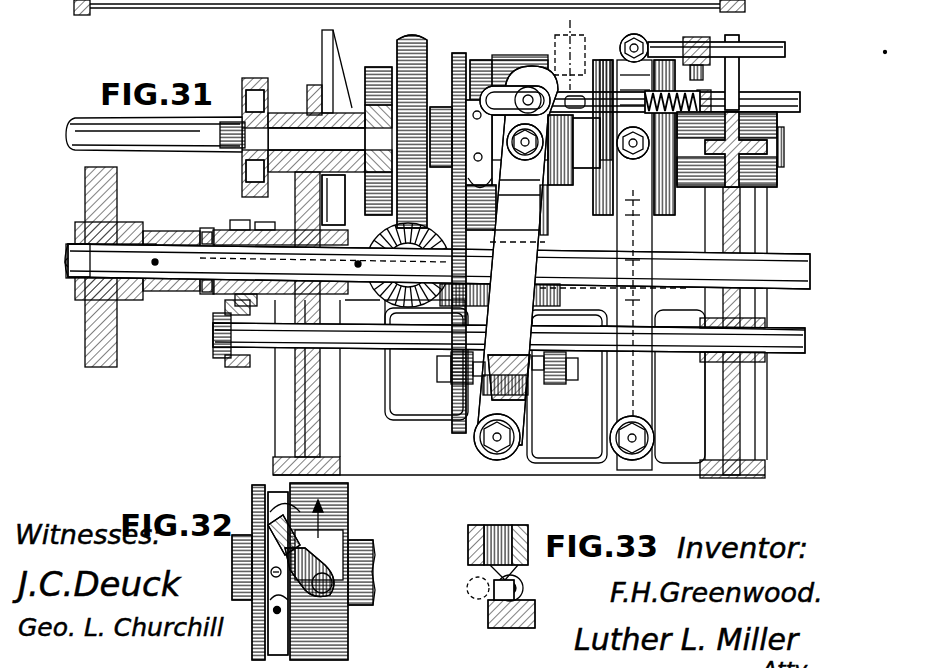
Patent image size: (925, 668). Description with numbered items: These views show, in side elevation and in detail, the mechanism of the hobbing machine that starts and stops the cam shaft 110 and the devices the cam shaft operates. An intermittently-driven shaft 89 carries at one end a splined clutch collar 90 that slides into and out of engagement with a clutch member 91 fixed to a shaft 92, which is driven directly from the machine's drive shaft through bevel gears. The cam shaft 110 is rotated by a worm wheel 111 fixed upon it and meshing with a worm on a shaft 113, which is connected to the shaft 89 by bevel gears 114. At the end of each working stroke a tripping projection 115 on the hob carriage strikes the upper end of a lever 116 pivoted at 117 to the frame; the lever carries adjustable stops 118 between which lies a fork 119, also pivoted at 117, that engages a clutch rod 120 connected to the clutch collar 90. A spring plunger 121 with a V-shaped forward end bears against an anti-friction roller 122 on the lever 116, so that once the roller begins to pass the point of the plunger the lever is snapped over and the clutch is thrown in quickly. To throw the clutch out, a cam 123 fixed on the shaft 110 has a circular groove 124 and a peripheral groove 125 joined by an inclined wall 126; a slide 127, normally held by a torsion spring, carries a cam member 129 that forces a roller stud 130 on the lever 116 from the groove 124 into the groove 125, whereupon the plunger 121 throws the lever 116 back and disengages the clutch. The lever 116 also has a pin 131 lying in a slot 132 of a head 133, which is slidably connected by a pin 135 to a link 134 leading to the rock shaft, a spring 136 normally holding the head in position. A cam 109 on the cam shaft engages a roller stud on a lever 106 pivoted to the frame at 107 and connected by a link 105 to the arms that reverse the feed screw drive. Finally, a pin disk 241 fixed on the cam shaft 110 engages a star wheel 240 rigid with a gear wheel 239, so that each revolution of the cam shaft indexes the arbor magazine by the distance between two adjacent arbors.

In FIG. 31, the intermittently-driven shaft 89 is at (800, 254).
In FIG. 31, the clutch collar 90 is at (226, 242).
In FIG. 31, the clutch member 91 is at (166, 243).
In FIG. 31, the shaft 92 is at (66, 262).
In FIG. 31, the link 105 is at (770, 42).
In FIG. 31, the lever 106 is at (633, 35).
In FIG. 31, the pivot 107 is at (631, 446).
In FIG. 31, the cam 109 is at (602, 48).
In FIG. 31, the cam shaft 110 is at (98, 118).
In FIG. 31, the worm wheel 111 is at (420, 40).
In FIG. 31, the shaft 113 is at (412, 318).
In FIG. 31, the bevel gears 114 is at (380, 230).
In FIG. 31, the tripping projection 115 is at (752, 74).
In FIG. 31, the lever 116 is at (535, 66).
In FIG. 33, the lever 116 is at (535, 605).
In FIG. 31, the pivot 117 is at (496, 445).
In FIG. 31, the adjustable stops 118 is at (462, 385).
In FIG. 31, the fork 119 is at (518, 402).
In FIG. 31, the clutch rod 120 is at (600, 350).
In FIG. 31, the spring plunger 121 is at (548, 243).
In FIG. 33, the spring plunger 121 is at (507, 525).
In FIG. 31, the anti-friction roller 122 is at (545, 290).
In FIG. 33, the anti-friction roller 122 is at (523, 582).
In FIG. 31, the cam 123 is at (496, 55).
In FIG. 32, the cam 123 is at (336, 512).
In FIG. 31, the circular groove 124 is at (478, 64).
In FIG. 32, the circular groove 124 is at (270, 485).
In FIG. 32, the peripheral groove 125 is at (324, 592).
In FIG. 32, the inclined wall 126 is at (312, 550).
In FIG. 31, the slide 127 is at (462, 155).
In FIG. 32, the slide 127 is at (262, 606).
In FIG. 31, the cam member 129 is at (466, 112).
In FIG. 32, the cam member 129 is at (268, 572).
In FIG. 32, the roller stud 130 is at (268, 530).
In FIG. 31, the pin 131 is at (538, 88).
In FIG. 31, the slot 132 is at (506, 86).
In FIG. 31, the head 133 is at (555, 150).
In FIG. 31, the link 134 is at (788, 96).
In FIG. 31, the pin 135 is at (585, 110).
In FIG. 31, the spring 136 is at (691, 114).
In FIG. 31, the gear wheel 239 is at (253, 78).
In FIG. 31, the star wheel 240 is at (378, 67).
In FIG. 31, the pin disk 241 is at (350, 105).